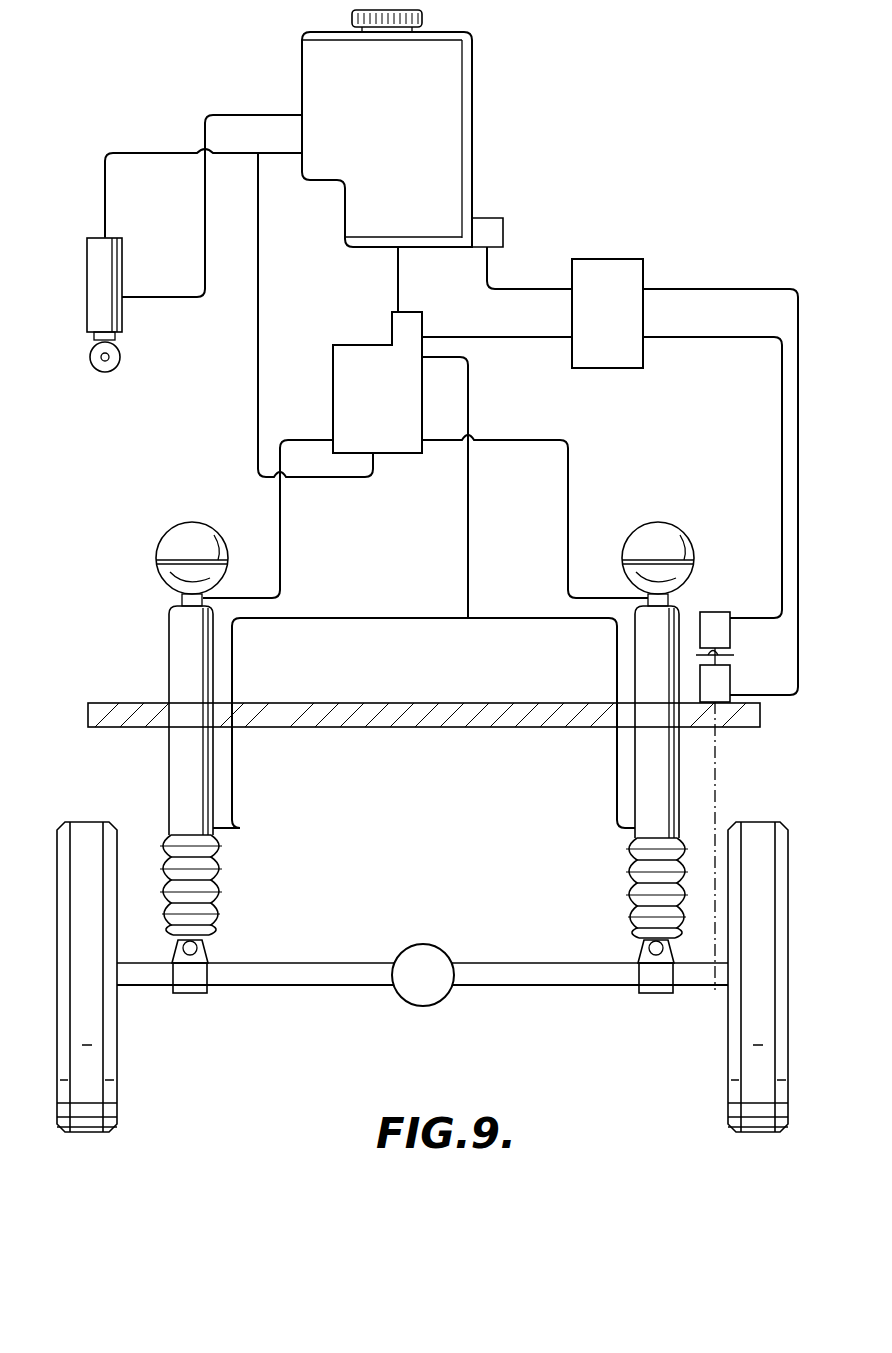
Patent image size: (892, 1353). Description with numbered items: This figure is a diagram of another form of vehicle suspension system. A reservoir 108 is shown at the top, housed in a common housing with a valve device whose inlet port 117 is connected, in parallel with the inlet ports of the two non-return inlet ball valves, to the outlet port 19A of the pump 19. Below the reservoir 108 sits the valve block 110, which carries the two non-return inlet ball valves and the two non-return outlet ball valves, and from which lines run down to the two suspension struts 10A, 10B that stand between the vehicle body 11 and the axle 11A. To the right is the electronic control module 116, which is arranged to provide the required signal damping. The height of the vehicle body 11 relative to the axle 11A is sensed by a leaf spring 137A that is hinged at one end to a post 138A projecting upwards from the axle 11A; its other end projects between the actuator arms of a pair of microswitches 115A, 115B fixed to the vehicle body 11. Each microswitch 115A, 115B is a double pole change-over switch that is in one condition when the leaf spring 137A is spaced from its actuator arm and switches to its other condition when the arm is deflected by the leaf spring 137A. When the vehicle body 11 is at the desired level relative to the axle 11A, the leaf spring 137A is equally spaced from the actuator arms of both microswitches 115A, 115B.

The reservoir 108 is at (445, 140).
The inlet port 117 is at (302, 160).
The pump 19 is at (105, 288).
The outlet port 19A is at (105, 237).
The valve block 110 is at (347, 378).
The control module 116 is at (597, 352).
The microswitch 115A is at (730, 683).
The microswitch 115B is at (730, 640).
The leaf spring 137A is at (708, 645).
The post 138A is at (715, 805).
The vehicle body 11 is at (470, 708).
The hydraulic strut 10A is at (183, 760).
The hydraulic strut 10B is at (658, 748).
The axle 11A is at (317, 975).